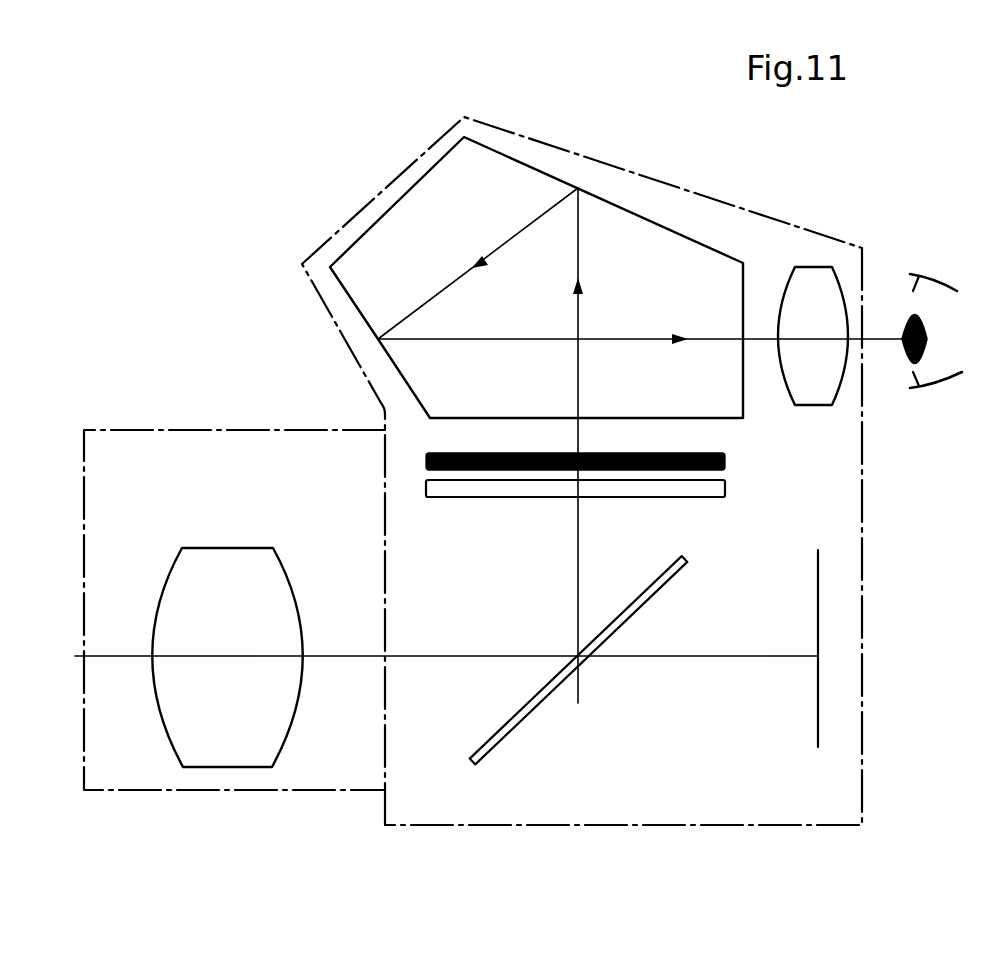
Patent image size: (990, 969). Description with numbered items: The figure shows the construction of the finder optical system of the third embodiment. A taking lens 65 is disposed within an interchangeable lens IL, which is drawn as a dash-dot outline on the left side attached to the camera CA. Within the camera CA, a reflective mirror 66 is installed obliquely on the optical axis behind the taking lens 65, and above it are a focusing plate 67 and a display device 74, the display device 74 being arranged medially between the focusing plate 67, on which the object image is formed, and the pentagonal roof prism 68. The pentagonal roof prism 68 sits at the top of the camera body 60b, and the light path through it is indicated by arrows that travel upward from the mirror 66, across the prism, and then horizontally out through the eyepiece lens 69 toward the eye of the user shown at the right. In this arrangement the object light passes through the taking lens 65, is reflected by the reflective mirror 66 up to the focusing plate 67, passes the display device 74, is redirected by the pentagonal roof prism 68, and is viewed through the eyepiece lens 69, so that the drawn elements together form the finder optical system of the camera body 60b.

The camera body 60b is at (684, 752).
The camera CA is at (345, 342).
The interchangeable lens IL is at (100, 430).
The taking lens 65 is at (240, 768).
The reflective mirror 66 is at (540, 703).
The focusing plate 67 is at (725, 488).
The display device 74 is at (725, 461).
The pentagonal roof prism 68 is at (405, 192).
The eyepiece lens 69 is at (815, 267).